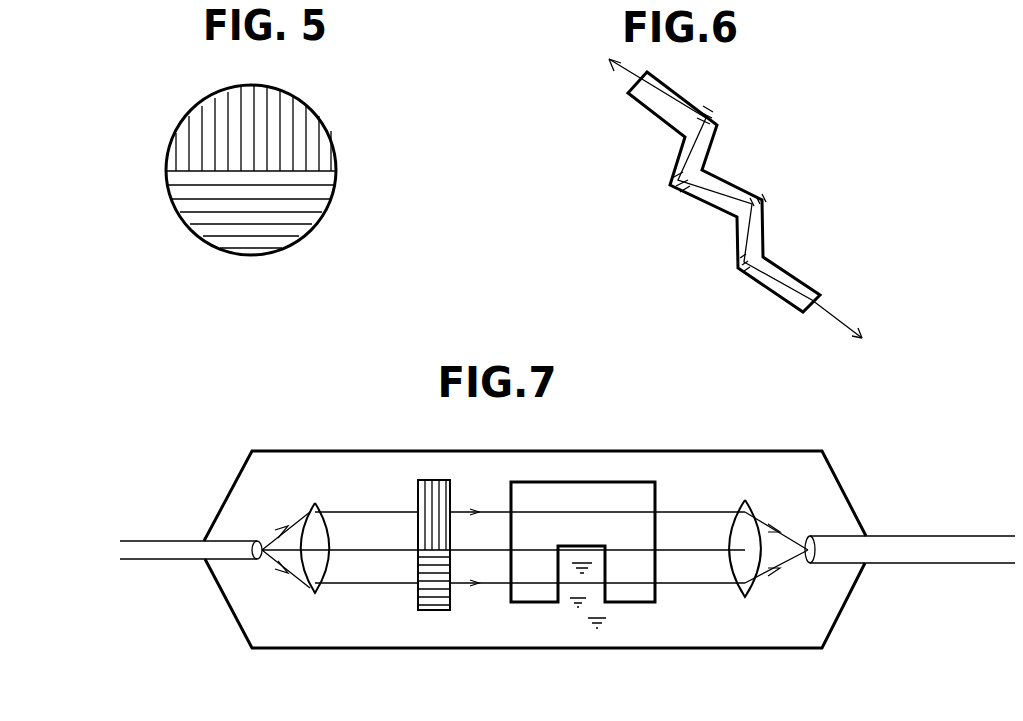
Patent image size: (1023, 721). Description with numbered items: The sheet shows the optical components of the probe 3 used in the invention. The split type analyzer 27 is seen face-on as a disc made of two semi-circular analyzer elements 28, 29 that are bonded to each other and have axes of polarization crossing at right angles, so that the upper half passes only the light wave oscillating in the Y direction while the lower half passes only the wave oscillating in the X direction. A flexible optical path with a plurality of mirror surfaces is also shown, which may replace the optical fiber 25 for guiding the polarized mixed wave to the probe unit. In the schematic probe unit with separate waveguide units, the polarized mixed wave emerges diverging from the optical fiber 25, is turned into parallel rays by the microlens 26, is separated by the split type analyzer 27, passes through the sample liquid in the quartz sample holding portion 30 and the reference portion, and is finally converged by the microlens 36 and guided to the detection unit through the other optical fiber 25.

In FIG. 7, the probe 3 is at (387, 623).
In FIG. 7, the optical fiber 25 is at (182, 550).
In FIG. 7, the microlens 26 is at (317, 532).
In FIG. 5, the split type analyzer 27 is at (141, 221).
In FIG. 7, the split type analyzer 27 is at (450, 497).
In FIG. 5, the semi-circular analyzer element 28 is at (316, 143).
In FIG. 5, the semi-circular analyzer element 29 is at (318, 198).
In FIG. 7, the sample holding portion 30 is at (600, 503).
In FIG. 7, the microlens 36 is at (750, 515).